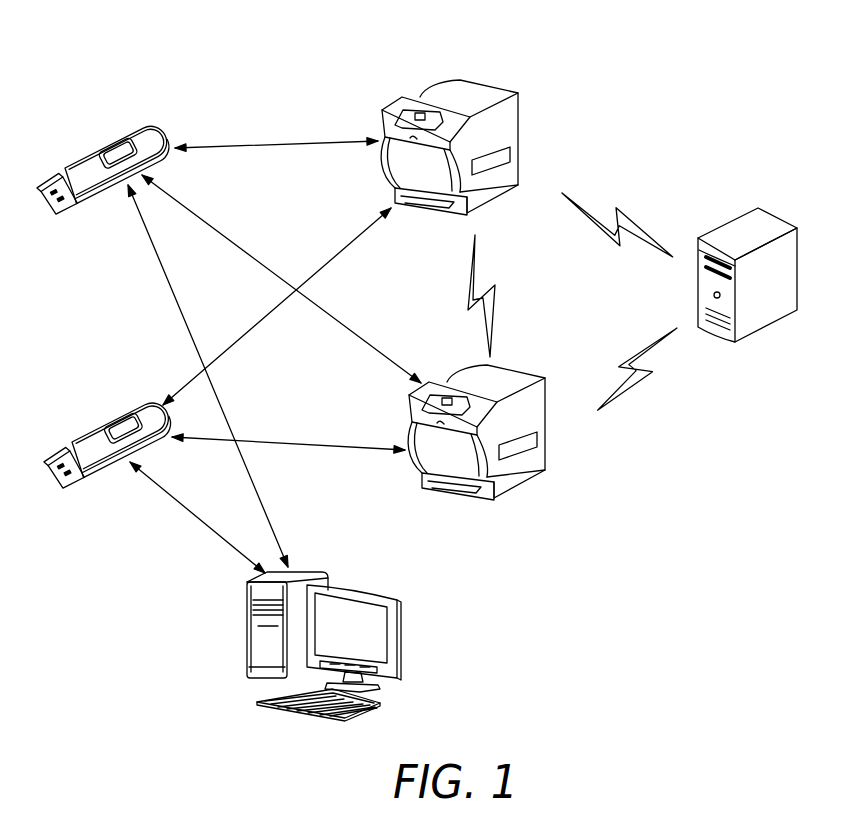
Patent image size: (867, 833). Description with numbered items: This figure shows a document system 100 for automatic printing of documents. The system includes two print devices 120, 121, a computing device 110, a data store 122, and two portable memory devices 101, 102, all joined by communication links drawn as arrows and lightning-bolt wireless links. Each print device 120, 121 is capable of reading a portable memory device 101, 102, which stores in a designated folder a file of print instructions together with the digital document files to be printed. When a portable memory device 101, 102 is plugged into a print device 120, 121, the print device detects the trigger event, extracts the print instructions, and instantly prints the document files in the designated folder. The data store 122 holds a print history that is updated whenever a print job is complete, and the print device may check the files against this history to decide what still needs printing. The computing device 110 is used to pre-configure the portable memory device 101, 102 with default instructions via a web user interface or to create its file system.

The document system 100 is at (327, 63).
The portable memory device 101 is at (108, 421).
The portable memory device 102 is at (106, 148).
The computing device 110 is at (400, 638).
The print device 120 is at (493, 80).
The print device 121 is at (513, 487).
The data store 122 is at (737, 217).